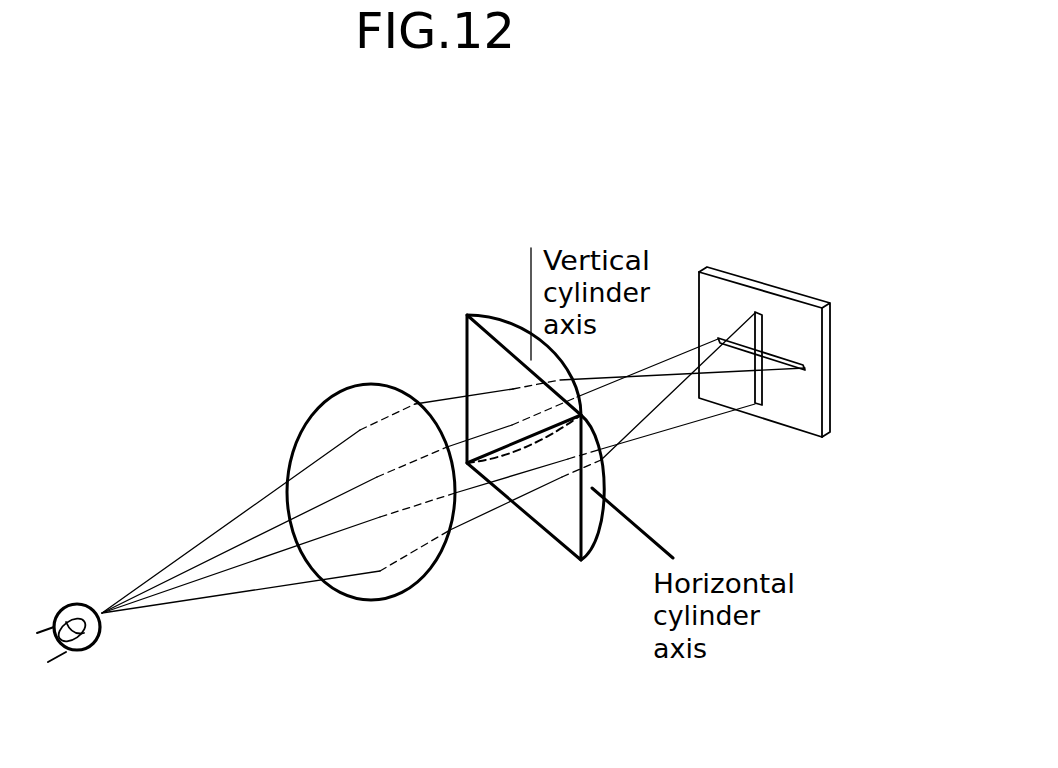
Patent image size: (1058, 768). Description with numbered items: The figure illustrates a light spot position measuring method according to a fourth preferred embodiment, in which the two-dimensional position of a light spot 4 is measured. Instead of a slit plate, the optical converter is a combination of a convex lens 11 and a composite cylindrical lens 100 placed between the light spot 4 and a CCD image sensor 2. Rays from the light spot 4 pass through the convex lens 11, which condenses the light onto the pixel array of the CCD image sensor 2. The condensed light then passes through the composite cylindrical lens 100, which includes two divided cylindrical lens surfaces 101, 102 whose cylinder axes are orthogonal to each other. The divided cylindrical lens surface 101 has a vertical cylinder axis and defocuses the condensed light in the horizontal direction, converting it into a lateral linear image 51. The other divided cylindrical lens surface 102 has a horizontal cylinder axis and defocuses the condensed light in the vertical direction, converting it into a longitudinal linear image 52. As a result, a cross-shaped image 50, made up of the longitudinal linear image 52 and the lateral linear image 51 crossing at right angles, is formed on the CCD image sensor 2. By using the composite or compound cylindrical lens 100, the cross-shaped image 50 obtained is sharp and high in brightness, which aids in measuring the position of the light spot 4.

The CCD image sensor 2 is at (717, 297).
The light spot 4 is at (98, 642).
The convex lens 11 is at (303, 425).
The cross-shaped image 50 is at (798, 318).
The lateral linear image 51 is at (785, 357).
The longitudinal linear image 52 is at (764, 388).
The composite cylindrical lens 100 is at (418, 388).
The divided cylindrical lens surface 101 is at (497, 365).
The divided cylindrical lens surface 102 is at (562, 525).